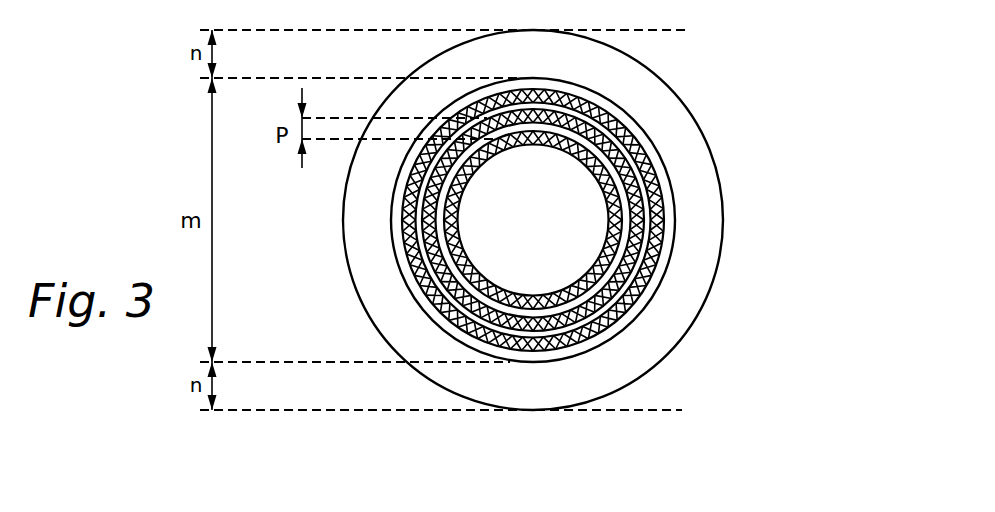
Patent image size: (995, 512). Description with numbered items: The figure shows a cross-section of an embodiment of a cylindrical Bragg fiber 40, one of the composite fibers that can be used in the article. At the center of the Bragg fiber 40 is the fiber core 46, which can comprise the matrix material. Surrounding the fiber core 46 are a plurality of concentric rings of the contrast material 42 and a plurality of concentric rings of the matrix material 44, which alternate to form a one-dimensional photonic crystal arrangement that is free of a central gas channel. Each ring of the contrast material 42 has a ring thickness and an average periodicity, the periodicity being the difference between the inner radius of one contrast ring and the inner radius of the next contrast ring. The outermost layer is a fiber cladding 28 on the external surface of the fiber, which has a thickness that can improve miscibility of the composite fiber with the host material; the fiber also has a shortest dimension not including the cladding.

The Bragg fiber 40 is at (567, 220).
The fiber cladding 28 is at (700, 183).
The concentric rings of the matrix material 44 is at (405, 273).
The concentric rings of the contrast material 42 is at (604, 330).
The fiber core 46 is at (557, 265).